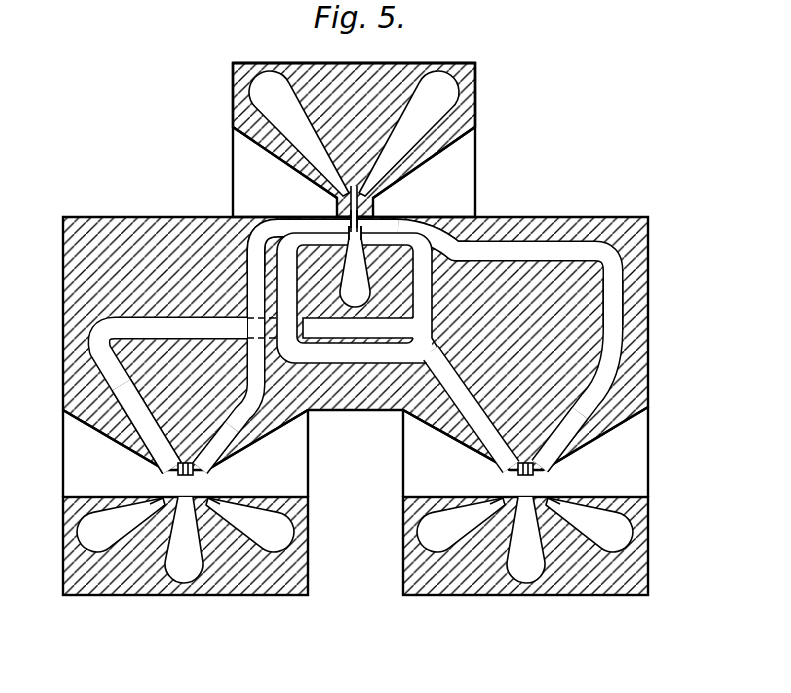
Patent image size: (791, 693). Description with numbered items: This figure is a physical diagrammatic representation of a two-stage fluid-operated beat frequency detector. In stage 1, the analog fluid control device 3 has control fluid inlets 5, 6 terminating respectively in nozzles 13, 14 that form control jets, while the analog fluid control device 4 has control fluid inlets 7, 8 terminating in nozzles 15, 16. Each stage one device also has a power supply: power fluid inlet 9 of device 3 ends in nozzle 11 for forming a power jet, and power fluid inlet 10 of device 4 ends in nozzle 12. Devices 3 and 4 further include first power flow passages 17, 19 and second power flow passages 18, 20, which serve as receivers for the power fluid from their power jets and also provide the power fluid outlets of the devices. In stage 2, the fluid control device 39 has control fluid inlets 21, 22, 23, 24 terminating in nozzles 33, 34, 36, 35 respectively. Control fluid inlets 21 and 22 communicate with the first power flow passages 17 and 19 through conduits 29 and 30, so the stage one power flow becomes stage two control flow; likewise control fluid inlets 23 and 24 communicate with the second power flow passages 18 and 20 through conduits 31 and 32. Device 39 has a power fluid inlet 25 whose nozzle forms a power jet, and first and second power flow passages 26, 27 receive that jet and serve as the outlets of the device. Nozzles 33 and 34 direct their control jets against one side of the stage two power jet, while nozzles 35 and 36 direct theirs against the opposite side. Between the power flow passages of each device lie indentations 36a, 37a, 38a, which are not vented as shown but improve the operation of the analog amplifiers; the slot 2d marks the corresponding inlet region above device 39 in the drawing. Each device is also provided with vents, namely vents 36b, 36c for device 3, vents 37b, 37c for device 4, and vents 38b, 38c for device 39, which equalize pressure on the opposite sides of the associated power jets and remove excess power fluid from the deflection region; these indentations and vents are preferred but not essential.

The stage 1 is at (650, 334).
The stage 2 is at (478, 92).
The inlet nozzle 2d is at (353, 213).
The analog fluid control device 3 is at (63, 383).
The analog fluid control device 4 is at (634, 395).
The control fluid inlet 5 is at (92, 535).
The control fluid inlet 6 is at (278, 535).
The control fluid inlet 7 is at (430, 535).
The control fluid inlet 8 is at (617, 532).
The power fluid inlet 9 is at (184, 572).
The power fluid inlet 10 is at (524, 572).
The nozzle 11 is at (184, 540).
The nozzle 12 is at (526, 540).
The nozzle 13 is at (150, 507).
The nozzle 14 is at (220, 507).
The nozzle 15 is at (490, 507).
The nozzle 16 is at (551, 507).
The first power flow passage 17 is at (228, 416).
The second power flow passage 18 is at (143, 422).
The first power flow passage 19 is at (487, 426).
The second power flow passage 20 is at (559, 421).
The control fluid inlet 21 is at (277, 225).
The control fluid inlet 22 is at (357, 298).
The control fluid inlet 23 is at (442, 232).
The control fluid inlet 24 is at (485, 231).
The power fluid inlet 25 is at (355, 266).
The first power flow passage 26 is at (400, 124).
The second power flow passage 27 is at (268, 124).
The conduit 29 is at (248, 288).
The conduit 30 is at (340, 357).
The conduit 31 is at (424, 322).
The conduit 32 is at (620, 291).
The nozzle 33 is at (338, 222).
The nozzle 34 is at (354, 250).
The nozzle 35 is at (366, 226).
The nozzle 36 is at (400, 222).
The indentation 36a is at (185, 482).
The vent 36b is at (74, 449).
The vent 36c is at (297, 457).
The indentation 37a is at (526, 482).
The vent 37b is at (412, 478).
The vent 37c is at (640, 442).
The indentation 38a is at (352, 186).
The vent 38b is at (253, 162).
The vent 38c is at (467, 163).
The fluid control device 39 is at (481, 51).